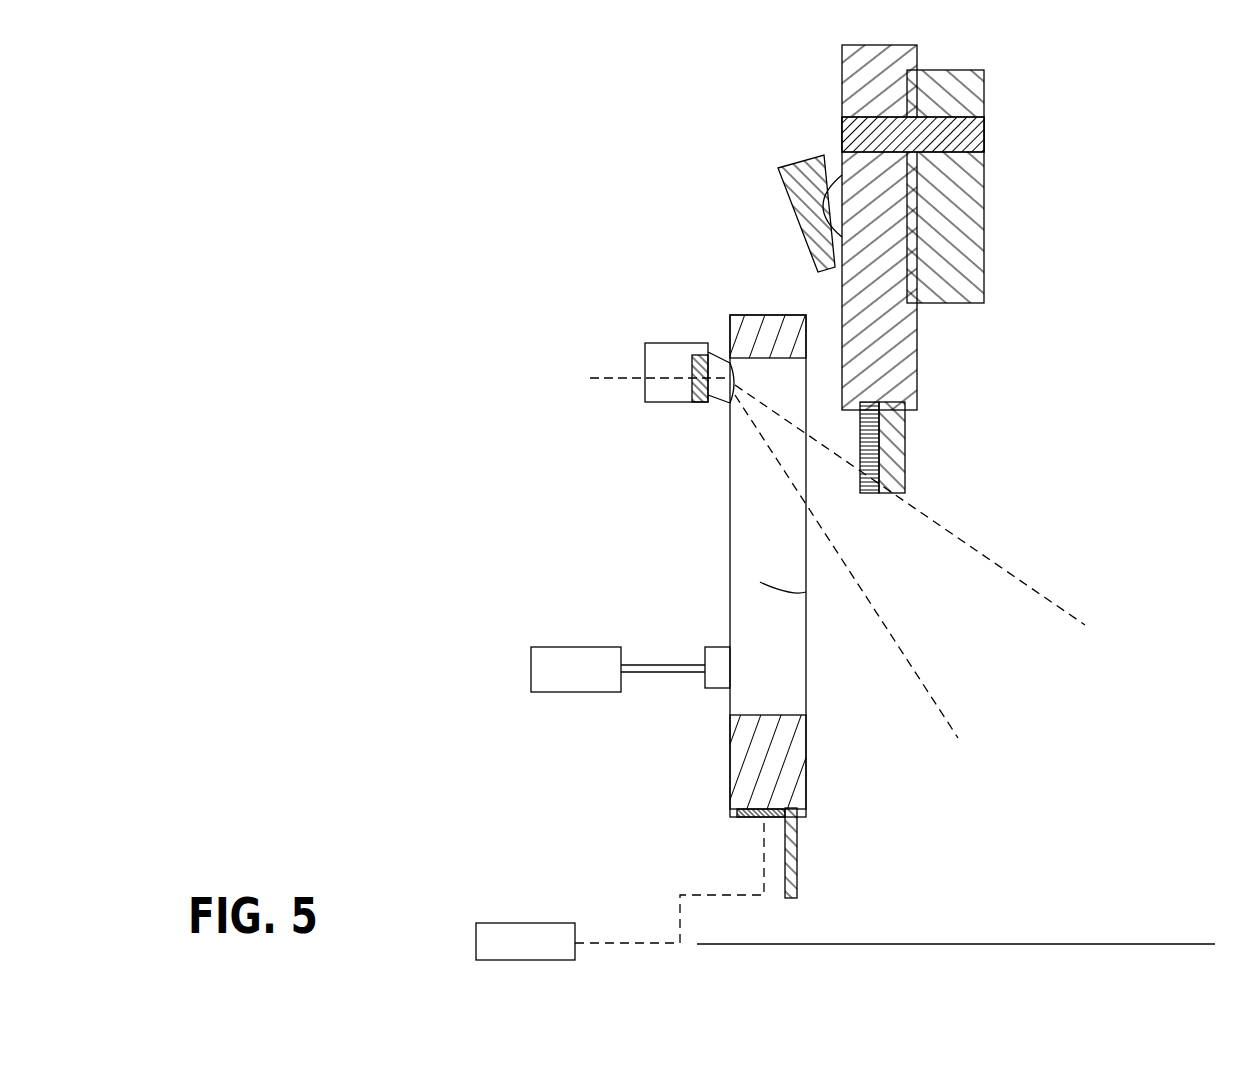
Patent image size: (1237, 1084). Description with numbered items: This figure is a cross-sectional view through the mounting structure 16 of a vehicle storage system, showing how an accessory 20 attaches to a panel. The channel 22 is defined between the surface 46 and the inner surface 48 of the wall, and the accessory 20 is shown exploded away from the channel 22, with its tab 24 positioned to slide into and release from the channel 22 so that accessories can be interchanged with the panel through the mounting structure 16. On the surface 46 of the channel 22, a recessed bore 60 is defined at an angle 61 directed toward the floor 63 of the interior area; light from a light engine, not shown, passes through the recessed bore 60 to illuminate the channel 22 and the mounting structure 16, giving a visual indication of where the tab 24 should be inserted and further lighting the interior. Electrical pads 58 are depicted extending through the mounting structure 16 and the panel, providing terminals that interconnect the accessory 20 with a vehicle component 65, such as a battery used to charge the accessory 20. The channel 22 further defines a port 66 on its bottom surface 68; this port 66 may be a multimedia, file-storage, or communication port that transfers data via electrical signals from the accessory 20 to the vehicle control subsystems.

The mounting structure 16 is at (684, 766).
The accessory 20 is at (1006, 134).
The channel 22 is at (742, 318).
The tab 24 is at (803, 158).
The surface 46 is at (730, 477).
The inner surface 48 is at (760, 582).
The electrical pads 58 is at (712, 650).
The recessed bore 60 is at (722, 373).
The angle 61 is at (714, 342).
The floor 63 is at (1100, 944).
The vehicle component 65 is at (570, 682).
The port 66 is at (745, 813).
The bottom surface 68 is at (527, 927).